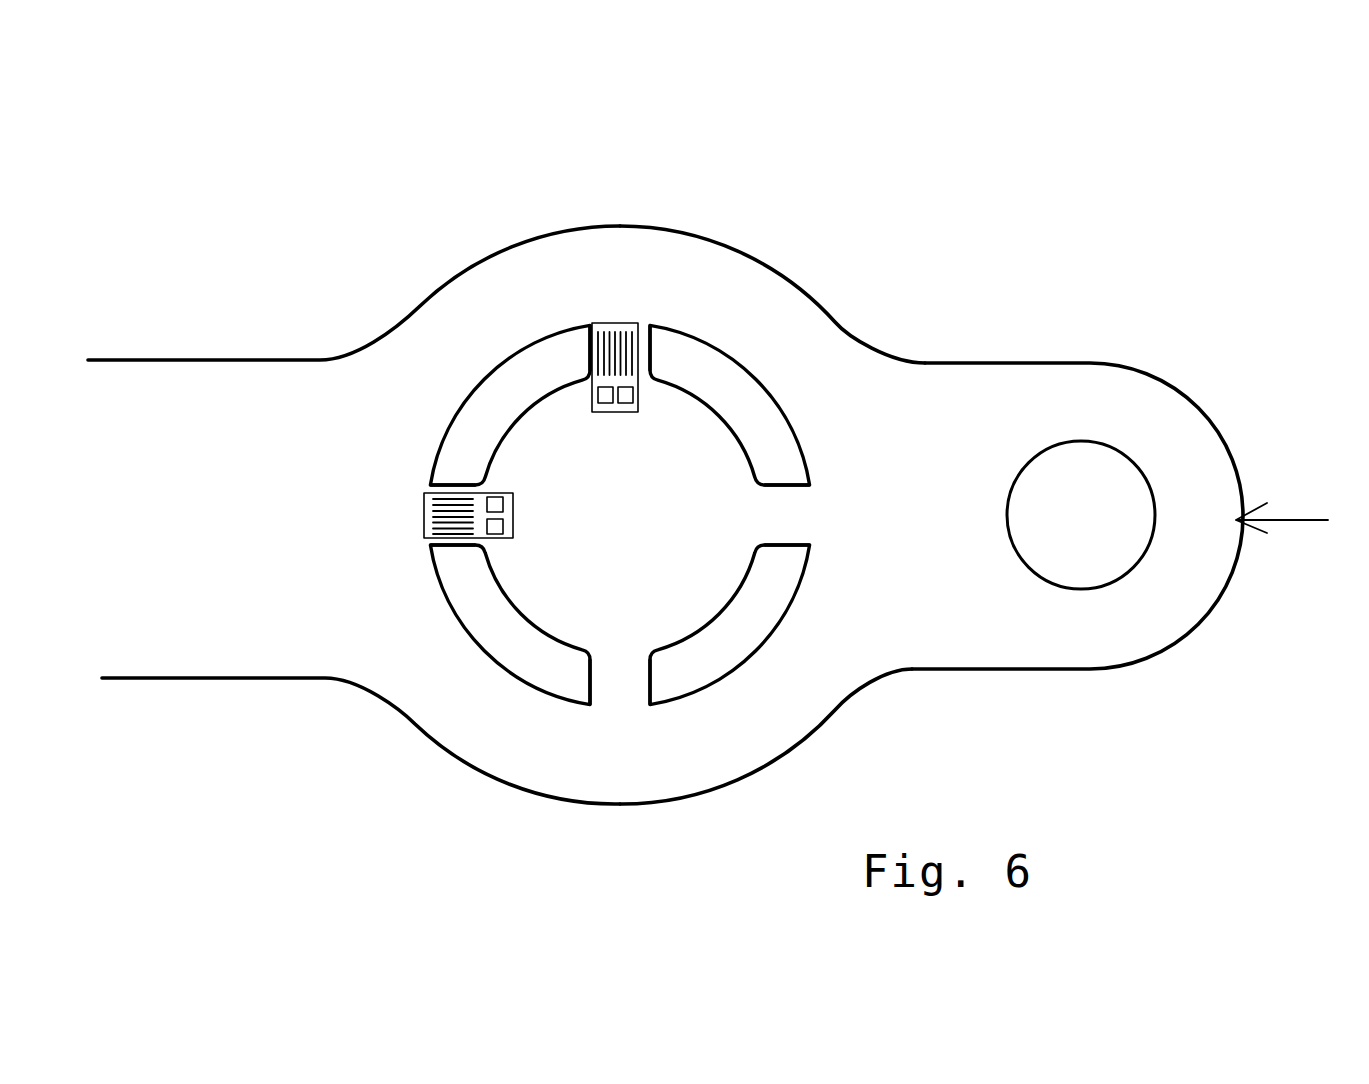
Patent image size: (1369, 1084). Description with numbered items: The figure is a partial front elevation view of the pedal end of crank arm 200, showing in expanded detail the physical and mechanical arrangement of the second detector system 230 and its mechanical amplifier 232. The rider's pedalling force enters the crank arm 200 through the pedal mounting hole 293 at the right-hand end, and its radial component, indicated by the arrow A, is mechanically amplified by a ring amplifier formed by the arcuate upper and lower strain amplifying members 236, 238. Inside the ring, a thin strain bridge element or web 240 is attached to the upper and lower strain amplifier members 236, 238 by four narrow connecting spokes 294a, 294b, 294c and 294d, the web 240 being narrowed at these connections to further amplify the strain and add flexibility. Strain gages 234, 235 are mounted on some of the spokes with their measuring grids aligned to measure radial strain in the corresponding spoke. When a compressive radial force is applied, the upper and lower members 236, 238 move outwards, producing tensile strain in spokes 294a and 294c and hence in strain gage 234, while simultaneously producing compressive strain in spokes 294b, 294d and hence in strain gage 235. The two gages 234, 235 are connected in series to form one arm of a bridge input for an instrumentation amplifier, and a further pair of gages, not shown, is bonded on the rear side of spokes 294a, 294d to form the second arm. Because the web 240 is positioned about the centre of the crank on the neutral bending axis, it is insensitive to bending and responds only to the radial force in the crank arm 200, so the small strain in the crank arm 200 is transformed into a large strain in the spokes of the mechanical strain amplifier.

The crank arm 200 is at (185, 203).
The second detector system 230 is at (425, 522).
The amplifier 232 is at (793, 297).
The strain gage 234 is at (615, 327).
The strain gage 235 is at (422, 495).
The upper strain amplifying member 236 is at (716, 270).
The lower strain amplifying member 238 is at (808, 698).
The web 240 is at (700, 482).
The pedal mounting hole 293 is at (1070, 480).
The connecting spoke 294a is at (587, 328).
The connecting spoke 294b is at (798, 533).
The connecting spoke 294c is at (638, 702).
The connecting spoke 294d is at (425, 537).